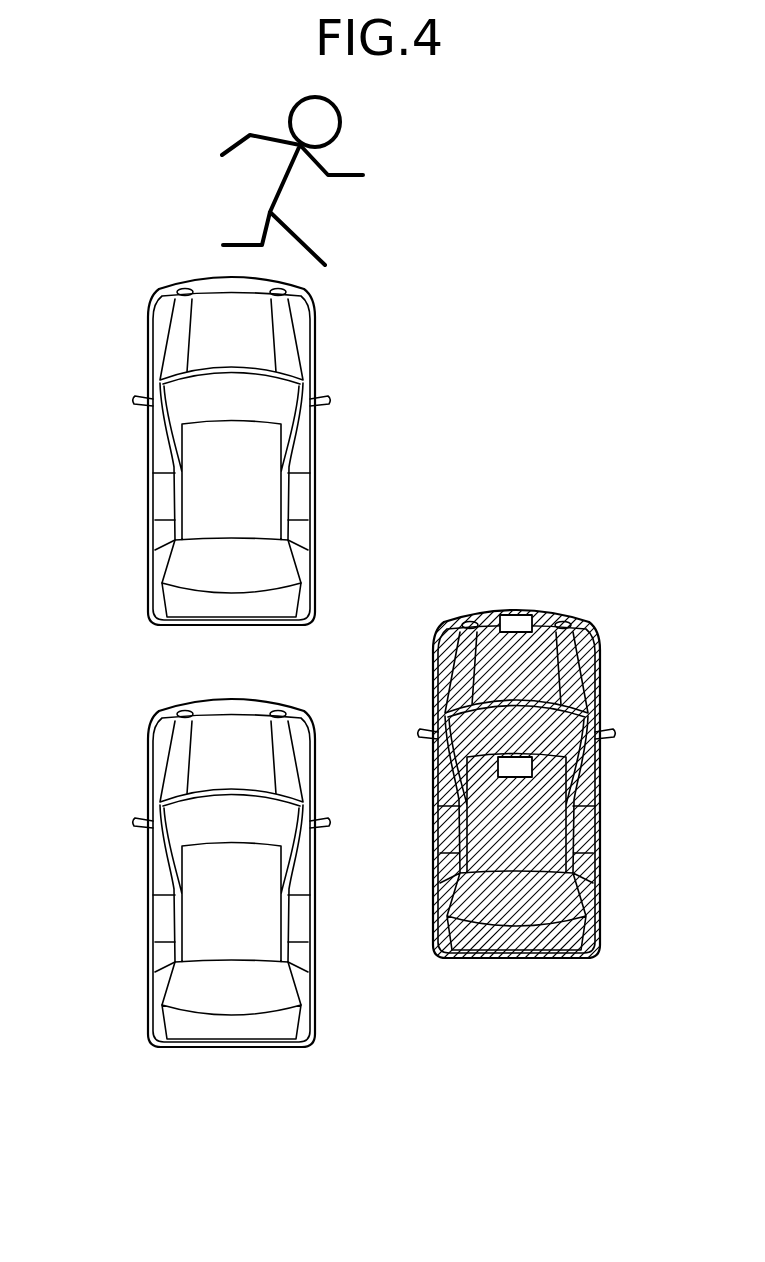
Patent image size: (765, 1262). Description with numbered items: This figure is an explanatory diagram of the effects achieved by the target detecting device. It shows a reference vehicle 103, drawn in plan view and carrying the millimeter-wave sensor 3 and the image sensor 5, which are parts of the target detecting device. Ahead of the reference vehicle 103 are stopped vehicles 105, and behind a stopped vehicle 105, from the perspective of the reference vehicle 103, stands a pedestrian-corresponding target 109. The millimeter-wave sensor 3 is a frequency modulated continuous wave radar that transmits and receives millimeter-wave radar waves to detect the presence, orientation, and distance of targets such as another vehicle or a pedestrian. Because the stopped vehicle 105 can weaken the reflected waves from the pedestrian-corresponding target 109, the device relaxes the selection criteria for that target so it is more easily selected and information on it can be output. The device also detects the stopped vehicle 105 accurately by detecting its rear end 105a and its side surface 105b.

The pedestrian-corresponding target 109 is at (350, 172).
The stopped vehicle 105 is at (147, 427).
The rear end 105a is at (217, 628).
The side surface 105b is at (315, 432).
The reference vehicle 103 is at (600, 655).
The millimeter-wave sensor 3 is at (523, 610).
The image sensor 5 is at (532, 765).